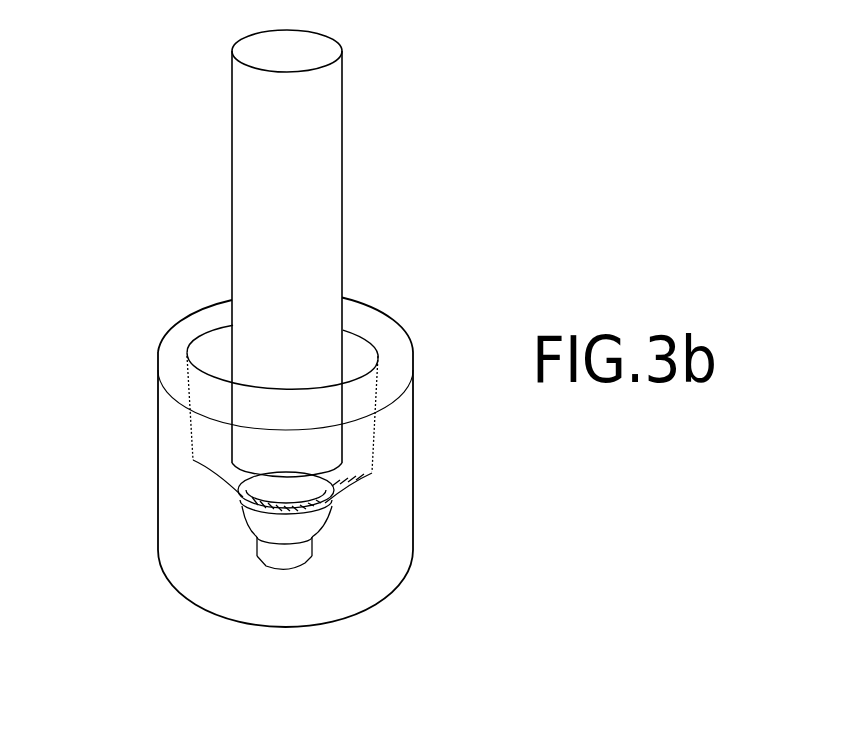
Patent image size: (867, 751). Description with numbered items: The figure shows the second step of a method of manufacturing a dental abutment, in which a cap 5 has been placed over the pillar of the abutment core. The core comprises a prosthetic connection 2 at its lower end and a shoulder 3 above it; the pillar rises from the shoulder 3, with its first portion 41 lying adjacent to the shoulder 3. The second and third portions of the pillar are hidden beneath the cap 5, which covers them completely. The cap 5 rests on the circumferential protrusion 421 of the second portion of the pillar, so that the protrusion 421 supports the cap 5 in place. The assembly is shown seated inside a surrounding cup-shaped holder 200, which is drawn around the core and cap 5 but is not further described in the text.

The prosthetic connection 2 is at (250, 553).
The shoulder 3 is at (243, 520).
The cap 5 is at (262, 228).
The first portion 41 is at (312, 474).
The circumferential protrusion 421 is at (252, 473).
The container 200 is at (170, 410).